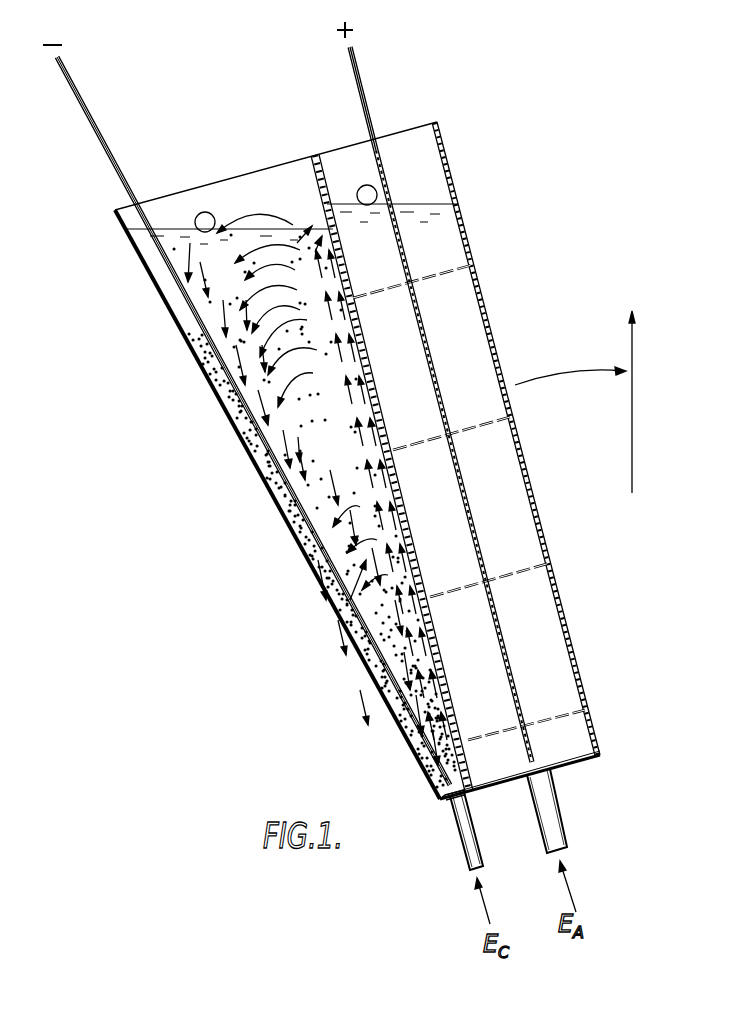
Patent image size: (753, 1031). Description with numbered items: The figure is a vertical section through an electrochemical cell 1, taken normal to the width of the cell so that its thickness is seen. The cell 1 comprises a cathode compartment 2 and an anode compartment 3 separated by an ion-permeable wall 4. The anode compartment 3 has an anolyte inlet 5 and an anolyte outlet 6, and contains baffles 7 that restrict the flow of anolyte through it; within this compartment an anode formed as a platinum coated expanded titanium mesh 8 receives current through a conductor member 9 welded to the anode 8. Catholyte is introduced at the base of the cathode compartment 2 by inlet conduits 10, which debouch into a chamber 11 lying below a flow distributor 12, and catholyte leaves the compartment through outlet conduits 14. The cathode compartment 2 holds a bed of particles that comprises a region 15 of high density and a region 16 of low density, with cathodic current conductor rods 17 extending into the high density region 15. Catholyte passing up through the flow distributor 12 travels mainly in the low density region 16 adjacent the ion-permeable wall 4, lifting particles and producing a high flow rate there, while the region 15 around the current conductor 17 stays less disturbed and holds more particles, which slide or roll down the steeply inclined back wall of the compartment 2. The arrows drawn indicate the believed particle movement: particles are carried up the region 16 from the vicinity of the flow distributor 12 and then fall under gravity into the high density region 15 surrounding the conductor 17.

The electrochemical cell 1 is at (232, 173).
The cathode compartment 2 is at (198, 363).
The anode compartment 3 is at (571, 653).
The ion-permeable wall 4 is at (455, 728).
The anolyte inlet 5 is at (551, 838).
The anolyte outlet 6 is at (365, 185).
The baffles 7 is at (462, 262).
The anode 8 is at (432, 366).
The conductor member 9 is at (368, 101).
The inlet conduits 10 is at (466, 853).
The chamber 11 is at (447, 806).
The flow distributor 12 is at (440, 797).
The outlet conduits 14 is at (205, 212).
The region of high density 15 is at (305, 548).
The region of low density 16 is at (388, 529).
The cathodic current conductor rods 17 is at (193, 308).